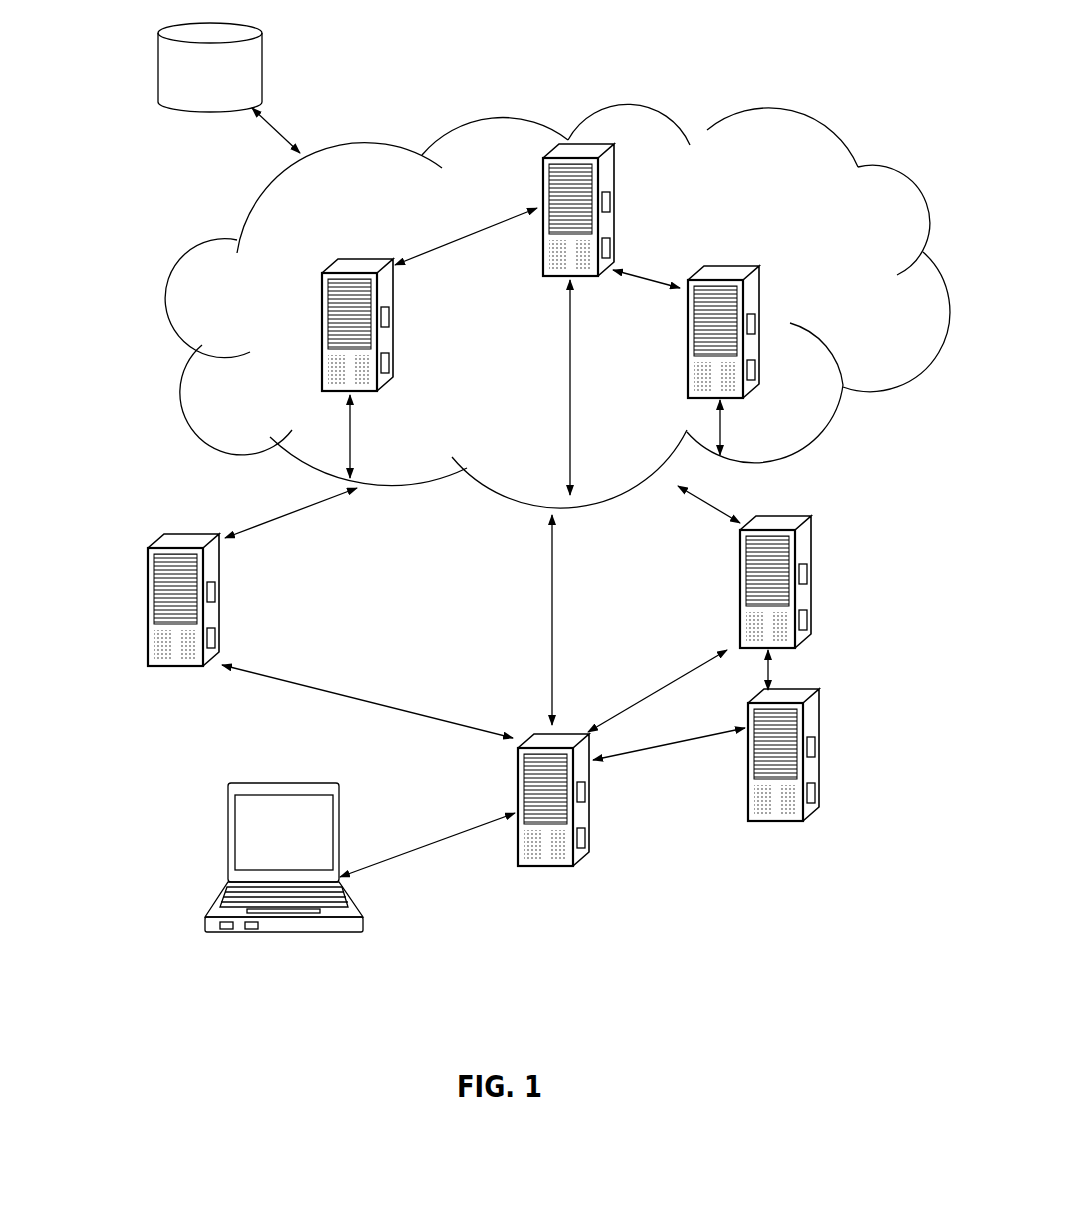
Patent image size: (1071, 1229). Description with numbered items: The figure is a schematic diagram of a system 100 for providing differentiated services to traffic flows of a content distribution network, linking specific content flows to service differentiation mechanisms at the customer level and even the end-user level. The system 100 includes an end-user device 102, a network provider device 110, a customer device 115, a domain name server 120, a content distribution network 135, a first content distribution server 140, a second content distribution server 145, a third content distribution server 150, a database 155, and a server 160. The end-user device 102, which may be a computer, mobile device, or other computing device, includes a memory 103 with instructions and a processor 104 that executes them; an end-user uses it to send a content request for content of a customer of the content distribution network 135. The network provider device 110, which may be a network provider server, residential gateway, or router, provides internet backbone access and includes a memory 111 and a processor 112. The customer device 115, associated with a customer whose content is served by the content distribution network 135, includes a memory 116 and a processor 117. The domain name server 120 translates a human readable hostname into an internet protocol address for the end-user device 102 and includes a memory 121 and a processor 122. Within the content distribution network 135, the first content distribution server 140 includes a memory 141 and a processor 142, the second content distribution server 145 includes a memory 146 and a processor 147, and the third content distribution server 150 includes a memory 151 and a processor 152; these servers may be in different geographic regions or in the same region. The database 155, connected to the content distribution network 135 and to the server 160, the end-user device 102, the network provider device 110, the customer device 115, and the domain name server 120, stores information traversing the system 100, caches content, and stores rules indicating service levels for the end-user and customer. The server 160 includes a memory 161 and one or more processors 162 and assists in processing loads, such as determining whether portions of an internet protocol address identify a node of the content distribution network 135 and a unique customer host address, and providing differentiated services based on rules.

The system 100 is at (532, 957).
The end-user device 102 is at (228, 827).
The memory 103 is at (226, 929).
The processor 104 is at (252, 929).
The network provider device 110 is at (518, 775).
The memory 111 is at (585, 790).
The processor 112 is at (585, 836).
The customer device 115 is at (813, 537).
The memory 116 is at (807, 574).
The processor 117 is at (807, 619).
The domain name server 120 is at (823, 712).
The memory 121 is at (815, 747).
The processor 122 is at (815, 797).
The content distribution network 135 is at (515, 118).
The first content distribution server 140 is at (543, 182).
The memory 141 is at (610, 202).
The processor 142 is at (610, 244).
The second content distribution server 145 is at (322, 298).
The memory 146 is at (389, 318).
The processor 147 is at (389, 363).
The third content distribution server 150 is at (763, 288).
The memory 151 is at (755, 322).
The processor 152 is at (755, 368).
The database 155 is at (210, 67).
The server 160 is at (148, 570).
The memory 161 is at (215, 590).
The processors 162 is at (215, 636).